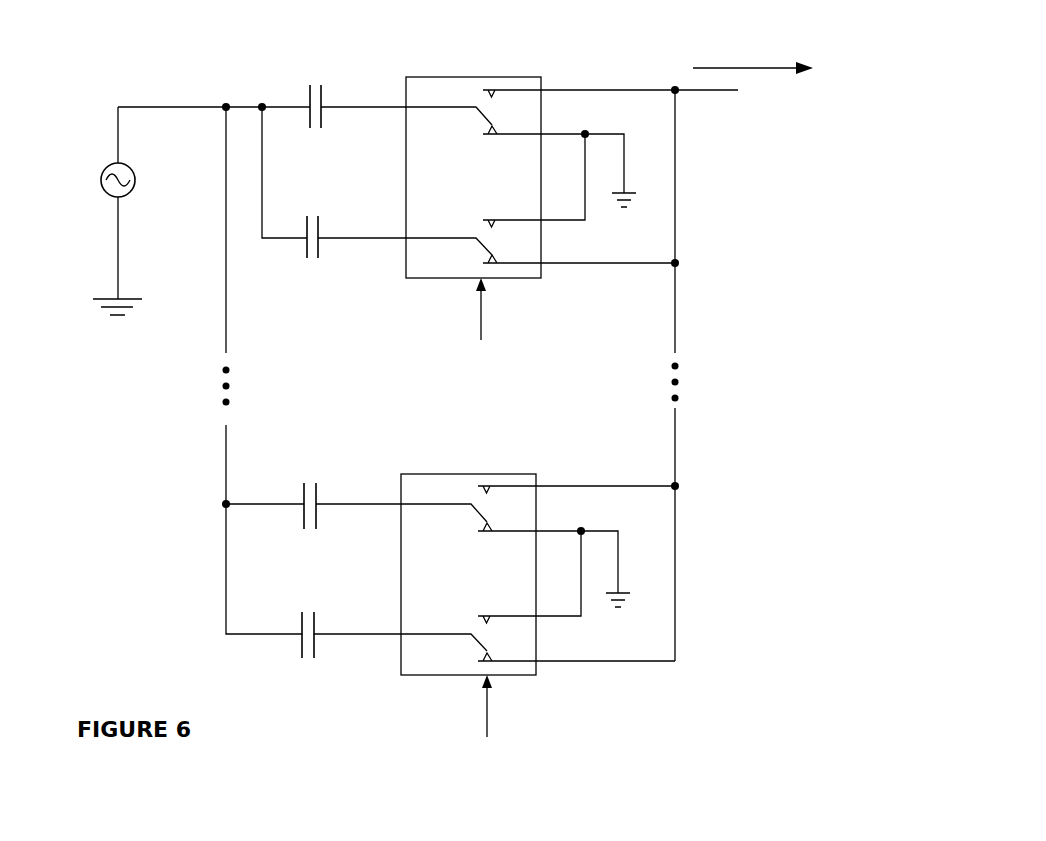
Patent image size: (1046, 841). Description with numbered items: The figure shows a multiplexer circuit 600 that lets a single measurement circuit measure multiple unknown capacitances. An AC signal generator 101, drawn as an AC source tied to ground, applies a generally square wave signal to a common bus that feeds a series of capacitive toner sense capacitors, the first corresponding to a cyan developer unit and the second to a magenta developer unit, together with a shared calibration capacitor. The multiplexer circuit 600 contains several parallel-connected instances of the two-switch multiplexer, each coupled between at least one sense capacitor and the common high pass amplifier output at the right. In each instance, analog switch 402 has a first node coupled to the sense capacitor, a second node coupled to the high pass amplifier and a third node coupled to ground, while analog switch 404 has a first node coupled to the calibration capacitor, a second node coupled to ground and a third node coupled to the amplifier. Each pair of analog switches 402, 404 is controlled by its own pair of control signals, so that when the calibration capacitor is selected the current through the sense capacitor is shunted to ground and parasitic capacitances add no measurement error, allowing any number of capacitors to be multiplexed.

The multiplexer circuit 600 is at (253, 50).
The AC signal generator 101 is at (92, 140).
The analog switch 402 is at (478, 143).
The analog switch 404 is at (473, 203).